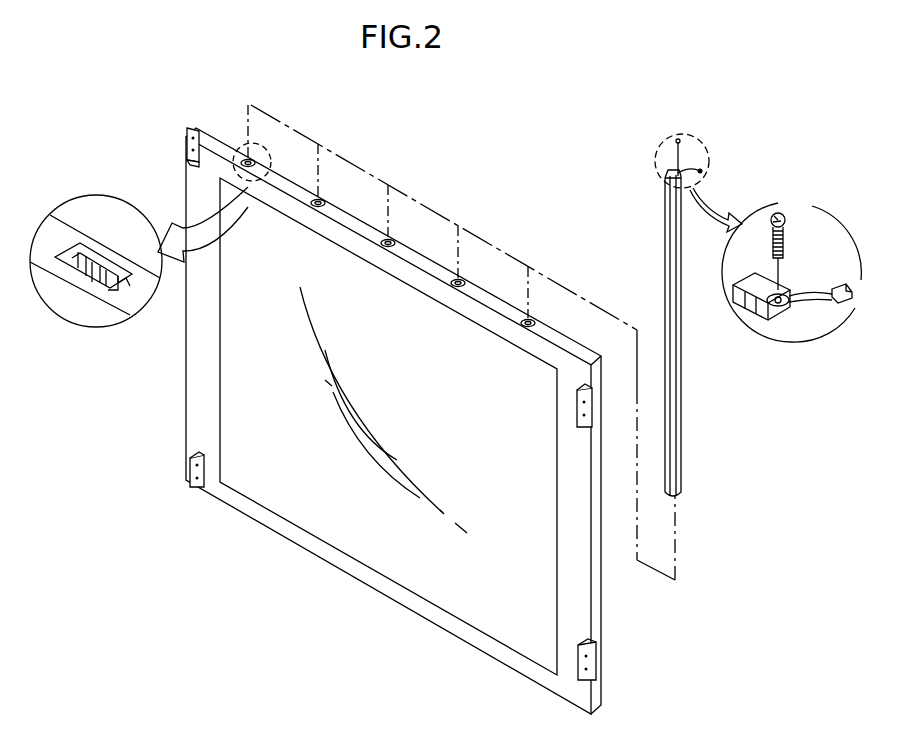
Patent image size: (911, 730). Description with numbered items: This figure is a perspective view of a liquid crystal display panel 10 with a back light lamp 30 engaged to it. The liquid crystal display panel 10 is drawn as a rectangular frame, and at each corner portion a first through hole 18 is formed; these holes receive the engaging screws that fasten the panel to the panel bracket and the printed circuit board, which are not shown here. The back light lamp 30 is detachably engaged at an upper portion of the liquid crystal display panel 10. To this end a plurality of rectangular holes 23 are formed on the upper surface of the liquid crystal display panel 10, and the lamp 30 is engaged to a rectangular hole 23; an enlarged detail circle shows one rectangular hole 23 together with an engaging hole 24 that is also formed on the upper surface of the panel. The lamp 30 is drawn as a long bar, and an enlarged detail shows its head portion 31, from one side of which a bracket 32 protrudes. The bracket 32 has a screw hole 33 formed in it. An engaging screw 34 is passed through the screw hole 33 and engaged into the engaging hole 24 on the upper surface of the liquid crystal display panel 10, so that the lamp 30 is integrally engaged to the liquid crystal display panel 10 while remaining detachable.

The liquid crystal display panel 10 is at (90, 96).
The first through hole 18 is at (595, 657).
The rectangular hole 23 is at (74, 248).
The engaging hole 24 is at (126, 248).
The back light lamp 30 is at (724, 136).
The head portion 31 is at (740, 305).
The bracket 32 is at (790, 301).
The screw hole 33 is at (780, 308).
The engaging screw 34 is at (786, 210).